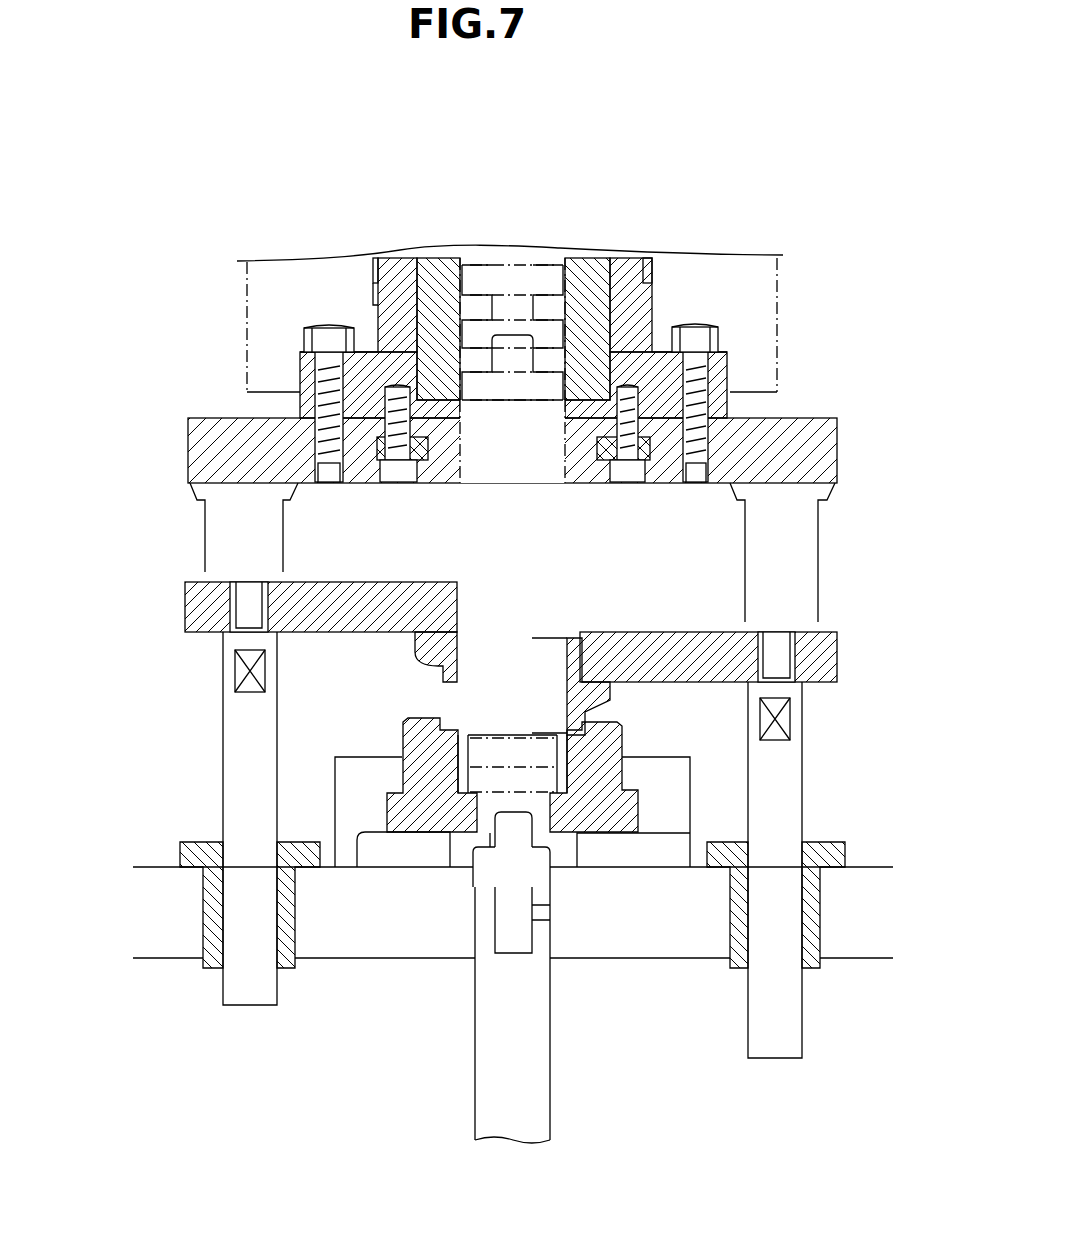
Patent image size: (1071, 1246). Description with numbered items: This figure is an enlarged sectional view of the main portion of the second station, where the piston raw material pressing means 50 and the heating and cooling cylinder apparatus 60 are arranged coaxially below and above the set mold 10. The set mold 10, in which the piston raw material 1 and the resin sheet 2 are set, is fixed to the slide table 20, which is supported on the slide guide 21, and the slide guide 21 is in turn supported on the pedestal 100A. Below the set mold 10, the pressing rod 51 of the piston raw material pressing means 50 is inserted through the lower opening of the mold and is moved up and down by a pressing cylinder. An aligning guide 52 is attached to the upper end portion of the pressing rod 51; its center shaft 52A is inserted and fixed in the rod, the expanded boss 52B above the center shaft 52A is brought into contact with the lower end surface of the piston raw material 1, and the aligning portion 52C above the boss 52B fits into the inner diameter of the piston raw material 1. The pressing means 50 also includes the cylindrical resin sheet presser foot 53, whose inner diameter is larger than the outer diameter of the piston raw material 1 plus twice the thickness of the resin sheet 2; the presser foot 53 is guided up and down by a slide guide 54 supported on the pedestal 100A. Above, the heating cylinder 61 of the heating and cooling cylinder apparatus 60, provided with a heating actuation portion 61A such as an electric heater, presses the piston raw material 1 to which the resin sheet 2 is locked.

The heating and cooling cylinder apparatus 60 is at (436, 218).
The heating cylinder 61 is at (585, 300).
The heating actuation portion 61A is at (648, 258).
The resin sheet 2 is at (463, 740).
The resin sheet presser foot 53 is at (443, 657).
The set mold 10 is at (413, 733).
The piston raw material 1 is at (460, 777).
The slide guide 54 is at (240, 713).
The slide guide 21 is at (350, 797).
The slide table 20 is at (400, 817).
The pedestal 100A is at (158, 922).
The piston raw material pressing means 50 is at (475, 1085).
The pressing rod 51 is at (542, 1079).
The aligning guide 52 is at (530, 870).
The center shaft 52A is at (497, 935).
The boss 52B is at (472, 868).
The aligning portion 52C is at (535, 832).